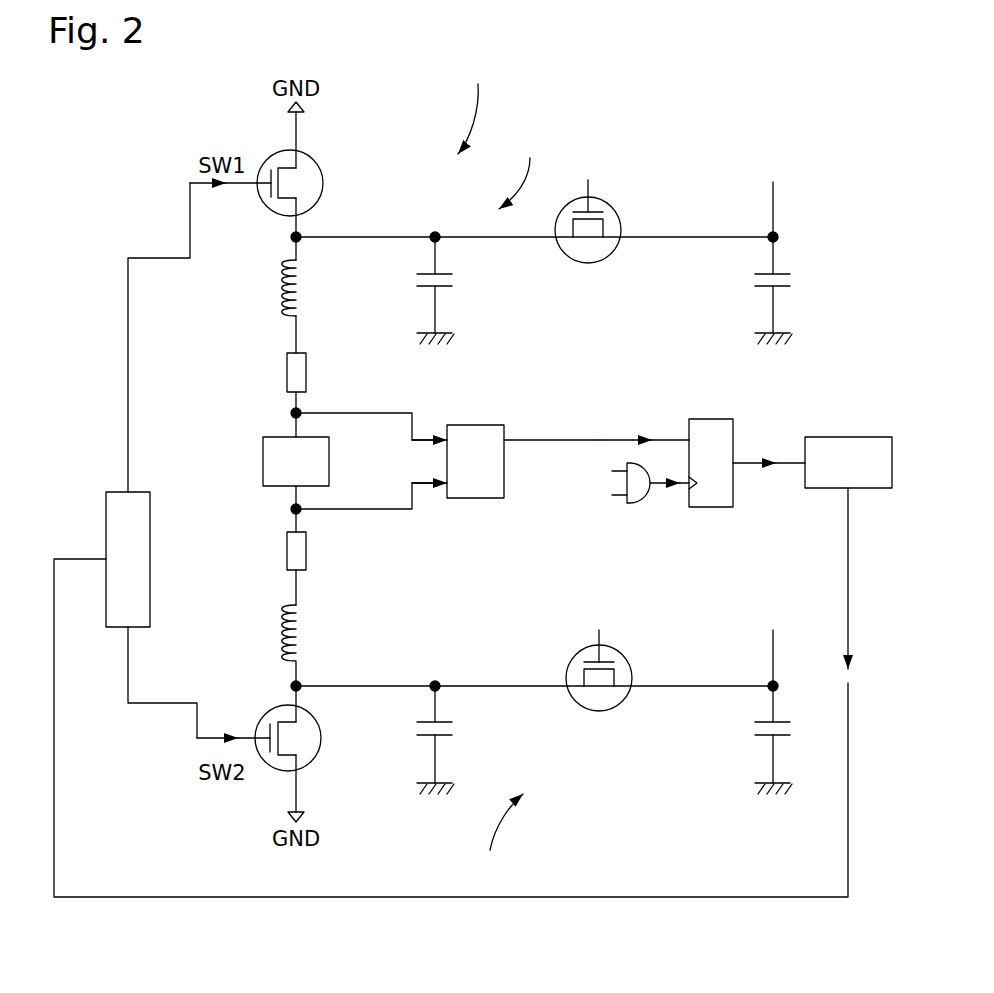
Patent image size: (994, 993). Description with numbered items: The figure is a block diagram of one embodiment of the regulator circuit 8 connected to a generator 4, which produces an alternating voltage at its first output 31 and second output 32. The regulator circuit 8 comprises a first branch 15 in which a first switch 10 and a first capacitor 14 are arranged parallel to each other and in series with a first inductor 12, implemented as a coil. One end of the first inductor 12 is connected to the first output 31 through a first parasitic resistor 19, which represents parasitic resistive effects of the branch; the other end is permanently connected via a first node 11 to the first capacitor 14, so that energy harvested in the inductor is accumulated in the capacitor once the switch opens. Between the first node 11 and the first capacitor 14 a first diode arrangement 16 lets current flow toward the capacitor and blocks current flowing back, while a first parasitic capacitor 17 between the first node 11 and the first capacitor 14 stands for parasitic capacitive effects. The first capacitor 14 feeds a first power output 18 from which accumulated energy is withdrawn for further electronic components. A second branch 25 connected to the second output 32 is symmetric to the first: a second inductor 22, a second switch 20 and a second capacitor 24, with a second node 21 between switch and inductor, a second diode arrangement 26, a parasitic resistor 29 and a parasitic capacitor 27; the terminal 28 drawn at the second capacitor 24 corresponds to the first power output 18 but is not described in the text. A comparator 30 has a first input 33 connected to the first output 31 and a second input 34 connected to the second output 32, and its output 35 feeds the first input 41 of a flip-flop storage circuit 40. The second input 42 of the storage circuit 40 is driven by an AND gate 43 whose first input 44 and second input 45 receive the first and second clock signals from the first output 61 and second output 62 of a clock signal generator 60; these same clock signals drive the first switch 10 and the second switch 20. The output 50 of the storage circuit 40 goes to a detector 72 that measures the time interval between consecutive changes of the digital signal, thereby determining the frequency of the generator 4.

The generator 4 is at (263, 458).
The regulator circuit 8 is at (471, 106).
The first switch 10 is at (313, 162).
The first node 11 is at (292, 238).
The first inductor 12 is at (285, 296).
The first capacitor 14 is at (786, 274).
The first branch 15 is at (521, 169).
The first diode arrangement 16 is at (617, 210).
The first parasitic capacitor 17 is at (420, 272).
The first power output 18 is at (776, 198).
The first parasitic resistor 19 is at (287, 364).
The second switch 20 is at (265, 716).
The second node 21 is at (300, 683).
The second inductor 22 is at (286, 632).
The second capacitor 24 is at (760, 738).
The second branch 25 is at (500, 834).
The second diode arrangement 26 is at (631, 665).
The parasitic capacitor 27 is at (442, 736).
The terminal 28 is at (770, 650).
The parasitic resistor 29 is at (287, 560).
The comparator 30 is at (470, 440).
The first output 31 is at (292, 413).
The second output 32 is at (300, 512).
The first input 33 is at (445, 437).
The second input 34 is at (445, 485).
The output 35 is at (507, 432).
The storage circuit 40 is at (712, 419).
The first input 41 is at (668, 440).
The second input 42 is at (660, 485).
The AND gate 43 is at (637, 504).
The first input 44 is at (622, 468).
The second input 45 is at (616, 497).
The output 50 is at (787, 462).
The clock signal generator 60 is at (152, 510).
The first output 61 is at (125, 488).
The second output 62 is at (125, 648).
The detector 72 is at (842, 437).